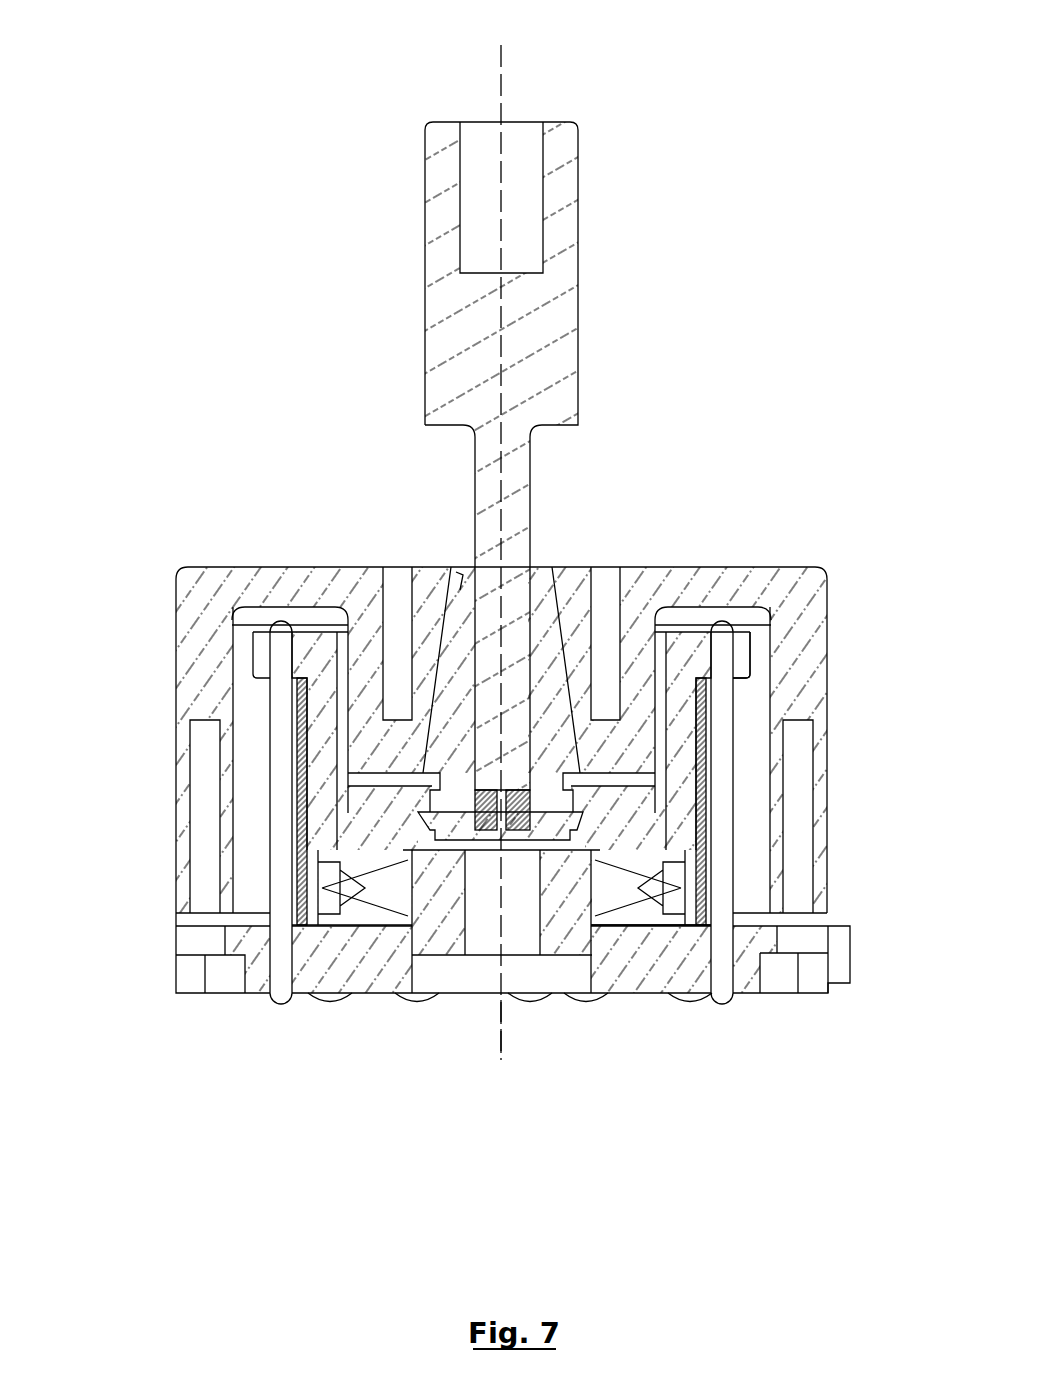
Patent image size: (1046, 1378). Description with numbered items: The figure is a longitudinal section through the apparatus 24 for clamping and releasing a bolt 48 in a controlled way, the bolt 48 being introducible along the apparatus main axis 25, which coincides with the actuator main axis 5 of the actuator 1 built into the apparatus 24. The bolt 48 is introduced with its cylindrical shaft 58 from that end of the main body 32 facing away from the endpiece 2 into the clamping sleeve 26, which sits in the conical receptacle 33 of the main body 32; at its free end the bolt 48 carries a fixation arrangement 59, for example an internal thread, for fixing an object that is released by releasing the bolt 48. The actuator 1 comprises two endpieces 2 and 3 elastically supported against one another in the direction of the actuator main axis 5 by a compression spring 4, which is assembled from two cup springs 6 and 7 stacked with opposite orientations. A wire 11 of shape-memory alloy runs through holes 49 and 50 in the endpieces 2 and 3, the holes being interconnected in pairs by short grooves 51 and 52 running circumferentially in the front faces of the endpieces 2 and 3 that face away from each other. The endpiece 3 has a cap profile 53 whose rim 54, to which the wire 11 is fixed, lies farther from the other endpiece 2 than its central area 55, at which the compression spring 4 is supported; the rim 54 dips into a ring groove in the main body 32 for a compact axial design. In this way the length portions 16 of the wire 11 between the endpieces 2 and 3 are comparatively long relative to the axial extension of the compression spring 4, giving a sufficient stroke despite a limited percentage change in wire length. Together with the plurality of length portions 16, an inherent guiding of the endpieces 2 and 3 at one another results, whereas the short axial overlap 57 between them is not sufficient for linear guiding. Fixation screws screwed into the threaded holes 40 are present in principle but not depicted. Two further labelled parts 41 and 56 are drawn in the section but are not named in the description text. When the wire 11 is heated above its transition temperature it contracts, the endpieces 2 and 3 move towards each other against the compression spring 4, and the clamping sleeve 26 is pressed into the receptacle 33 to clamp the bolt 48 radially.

The actuator 1 is at (747, 706).
The endpiece 2 is at (852, 957).
The endpiece 3 is at (750, 655).
The compression spring 4 is at (690, 890).
The actuator main axis 5 is at (505, 1030).
The cup spring 6 is at (633, 908).
The cup spring 7 is at (652, 872).
The wire 11 is at (266, 770).
The length portions 16 is at (290, 722).
The apparatus 24 is at (858, 523).
The apparatus main axis 25 is at (505, 1030).
The clamping sleeve 26 is at (455, 697).
The main body 32 is at (278, 566).
The receptacle 33 is at (456, 572).
The threaded holes 40 is at (193, 770).
The pin holder plate 41 is at (360, 797).
The bolt 48 is at (580, 260).
The holes 49 is at (245, 968).
The holes 50 is at (262, 642).
The grooves 51 is at (272, 1002).
The grooves 52 is at (262, 631).
The cap profile 53 is at (708, 772).
The rim 54 is at (733, 620).
The central area 55 is at (367, 856).
The left cap 56 is at (278, 614).
The axial overlap 57 is at (595, 945).
The cylindrical shaft 58 is at (532, 524).
The fixation arrangement 59 is at (478, 148).